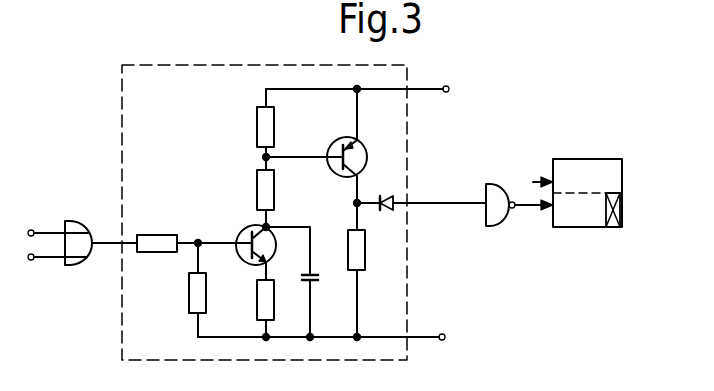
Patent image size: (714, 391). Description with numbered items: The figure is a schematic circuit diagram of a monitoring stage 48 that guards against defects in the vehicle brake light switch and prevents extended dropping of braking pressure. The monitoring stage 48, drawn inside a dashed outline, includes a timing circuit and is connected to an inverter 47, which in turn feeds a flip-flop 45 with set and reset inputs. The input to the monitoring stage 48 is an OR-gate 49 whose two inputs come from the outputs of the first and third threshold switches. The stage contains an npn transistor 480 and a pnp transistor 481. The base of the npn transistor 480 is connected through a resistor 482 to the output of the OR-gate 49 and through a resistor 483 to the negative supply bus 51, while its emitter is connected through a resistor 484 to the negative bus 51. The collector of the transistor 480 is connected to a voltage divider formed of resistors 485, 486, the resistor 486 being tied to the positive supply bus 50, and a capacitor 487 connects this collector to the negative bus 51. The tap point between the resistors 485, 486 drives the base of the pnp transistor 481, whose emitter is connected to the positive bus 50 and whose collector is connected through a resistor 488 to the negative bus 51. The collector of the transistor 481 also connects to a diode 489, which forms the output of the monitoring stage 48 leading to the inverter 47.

The flip-flop 45 is at (588, 159).
The inverter 47 is at (500, 184).
The monitoring stage 48 is at (118, 88).
The OR-gate 49 is at (72, 221).
The positive supply bus 50 is at (450, 87).
The negative supply bus 51 is at (446, 337).
The npn transistor 480 is at (249, 228).
The pnp transistor 481 is at (333, 139).
The resistor 482 is at (160, 235).
The resistor 483 is at (189, 297).
The resistor 484 is at (257, 298).
The resistor 485 is at (257, 180).
The resistor 486 is at (257, 113).
The capacitor 487 is at (314, 280).
The resistor 488 is at (365, 249).
The diode 489 is at (381, 195).